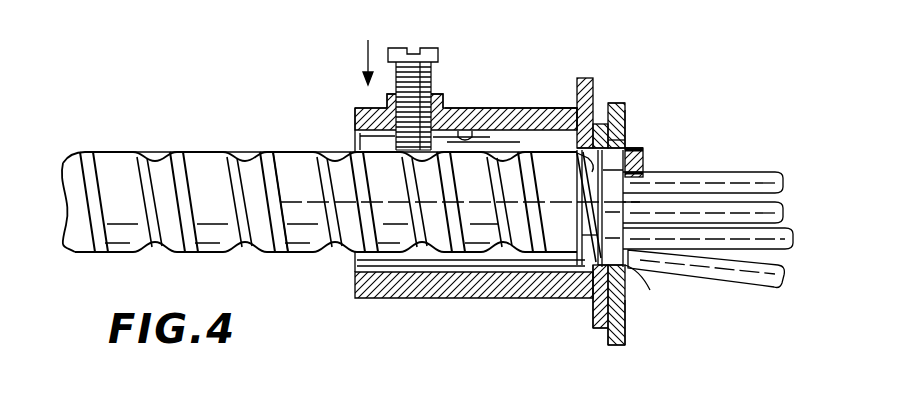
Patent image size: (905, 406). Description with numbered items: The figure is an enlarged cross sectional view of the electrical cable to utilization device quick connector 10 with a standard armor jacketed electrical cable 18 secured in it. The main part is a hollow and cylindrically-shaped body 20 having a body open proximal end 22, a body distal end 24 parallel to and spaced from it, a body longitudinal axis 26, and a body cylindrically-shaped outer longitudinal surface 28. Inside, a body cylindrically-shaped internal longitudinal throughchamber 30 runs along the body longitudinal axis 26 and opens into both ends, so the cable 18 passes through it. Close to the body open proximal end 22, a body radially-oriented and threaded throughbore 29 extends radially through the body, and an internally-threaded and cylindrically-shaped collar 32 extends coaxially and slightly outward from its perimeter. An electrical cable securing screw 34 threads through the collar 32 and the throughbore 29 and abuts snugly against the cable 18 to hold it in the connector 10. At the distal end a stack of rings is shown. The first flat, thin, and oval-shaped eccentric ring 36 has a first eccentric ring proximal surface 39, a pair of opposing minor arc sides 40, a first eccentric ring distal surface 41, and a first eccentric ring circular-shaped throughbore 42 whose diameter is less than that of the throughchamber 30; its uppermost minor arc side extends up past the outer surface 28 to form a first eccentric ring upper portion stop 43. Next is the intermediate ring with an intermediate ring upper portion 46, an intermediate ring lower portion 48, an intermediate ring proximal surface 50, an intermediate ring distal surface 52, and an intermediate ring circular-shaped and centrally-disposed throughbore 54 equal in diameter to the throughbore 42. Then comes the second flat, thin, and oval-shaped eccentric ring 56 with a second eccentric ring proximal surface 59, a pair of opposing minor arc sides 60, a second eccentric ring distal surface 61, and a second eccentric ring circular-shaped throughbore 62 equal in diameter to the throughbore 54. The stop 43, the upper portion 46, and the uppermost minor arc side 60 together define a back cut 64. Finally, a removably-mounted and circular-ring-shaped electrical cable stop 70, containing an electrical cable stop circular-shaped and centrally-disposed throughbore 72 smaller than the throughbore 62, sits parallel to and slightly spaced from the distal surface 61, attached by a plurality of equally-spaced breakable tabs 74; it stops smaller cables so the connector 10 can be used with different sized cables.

The electrical cable to utilization device quick connector 10 is at (334, 314).
The standard armor jacketed electrical cable 18 is at (122, 252).
The hollow and cylindrically-shaped body 20 is at (432, 300).
The body open proximal end 22 is at (355, 130).
The body distal end 24 is at (565, 116).
The body longitudinal axis 26 is at (283, 157).
The body cylindrically-shaped outer longitudinal surface 28 is at (495, 108).
The body radially-oriented and threaded throughbore 29 is at (360, 106).
The body cylindrically-shaped internal longitudinal throughchamber 30 is at (465, 131).
The internally-threaded and cylindrically-shaped collar 32 is at (444, 100).
The electrical cable securing screw 34 is at (392, 46).
The first flat, thin, and oval-shaped eccentric ring 36 is at (582, 78).
The first eccentric ring proximal surface 39 is at (578, 100).
The first eccentric ring pair of opposing minor arc sides 40 is at (598, 85).
The first eccentric ring distal surface 41 is at (602, 92).
The first eccentric ring circular-shaped throughbore 42 is at (575, 160).
The first eccentric ring upper portion stop 43 is at (612, 100).
The intermediate ring upper portion 46 is at (631, 135).
The intermediate ring lower portion 48 is at (604, 335).
The intermediate ring proximal surface 50 is at (600, 320).
The intermediate ring distal surface 52 is at (636, 305).
The intermediate ring circular-shaped and centrally-disposed throughbore 54 is at (588, 238).
The second flat, thin, and oval-shaped eccentric ring 56 is at (632, 325).
The second eccentric ring proximal surface 59 is at (610, 345).
The second eccentric ring pair of opposing minor arc sides 60 is at (628, 120).
The second eccentric ring distal surface 61 is at (627, 330).
The second eccentric ring circular-shaped throughbore 62 is at (636, 150).
The back cut 64 is at (623, 108).
The removably-mounted and circular-ring-shaped electrical cable stop 70 is at (645, 262).
The electrical cable stop circular-shaped and centrally-disposed throughbore 72 is at (647, 167).
The breakable tabs 74 is at (636, 286).